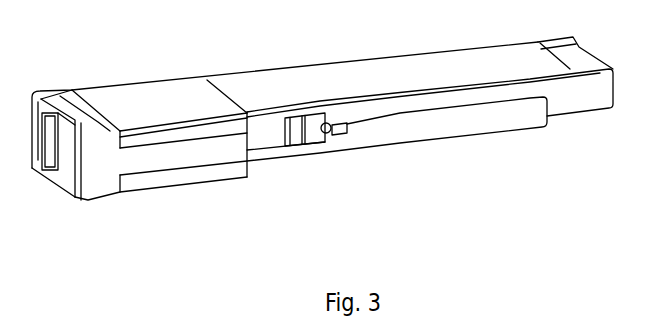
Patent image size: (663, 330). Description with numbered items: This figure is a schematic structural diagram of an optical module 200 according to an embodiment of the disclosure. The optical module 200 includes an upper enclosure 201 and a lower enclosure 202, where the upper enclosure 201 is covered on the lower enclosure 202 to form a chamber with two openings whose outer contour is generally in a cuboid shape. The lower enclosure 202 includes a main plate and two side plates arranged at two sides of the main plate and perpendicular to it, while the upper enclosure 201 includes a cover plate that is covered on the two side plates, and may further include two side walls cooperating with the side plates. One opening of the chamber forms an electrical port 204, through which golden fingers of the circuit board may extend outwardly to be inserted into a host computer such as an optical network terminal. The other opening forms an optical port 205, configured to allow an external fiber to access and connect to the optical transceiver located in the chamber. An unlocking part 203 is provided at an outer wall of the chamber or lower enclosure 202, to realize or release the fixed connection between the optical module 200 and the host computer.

The optical module 200 is at (176, 64).
The upper enclosure 201 is at (280, 98).
The lower enclosure 202 is at (375, 132).
The unlocking part 203 is at (212, 148).
The electrical port 204 is at (619, 67).
The optical port 205 is at (53, 141).